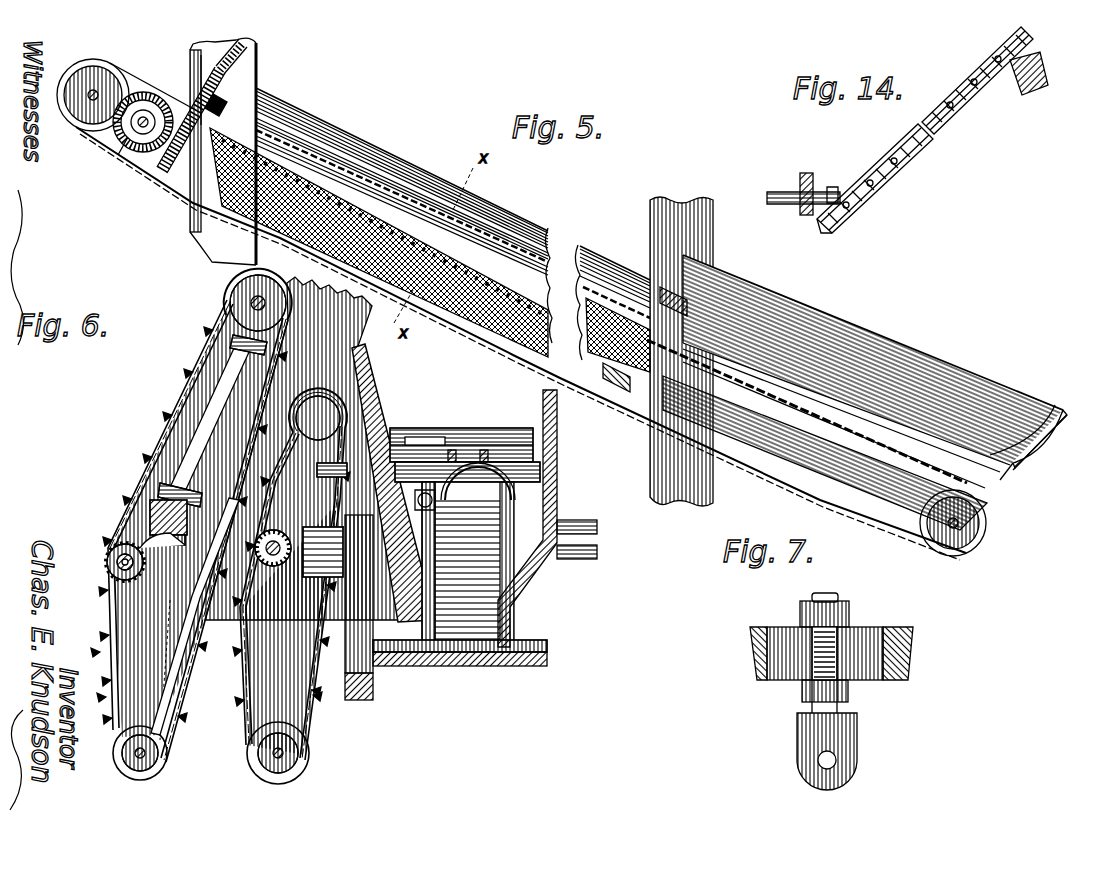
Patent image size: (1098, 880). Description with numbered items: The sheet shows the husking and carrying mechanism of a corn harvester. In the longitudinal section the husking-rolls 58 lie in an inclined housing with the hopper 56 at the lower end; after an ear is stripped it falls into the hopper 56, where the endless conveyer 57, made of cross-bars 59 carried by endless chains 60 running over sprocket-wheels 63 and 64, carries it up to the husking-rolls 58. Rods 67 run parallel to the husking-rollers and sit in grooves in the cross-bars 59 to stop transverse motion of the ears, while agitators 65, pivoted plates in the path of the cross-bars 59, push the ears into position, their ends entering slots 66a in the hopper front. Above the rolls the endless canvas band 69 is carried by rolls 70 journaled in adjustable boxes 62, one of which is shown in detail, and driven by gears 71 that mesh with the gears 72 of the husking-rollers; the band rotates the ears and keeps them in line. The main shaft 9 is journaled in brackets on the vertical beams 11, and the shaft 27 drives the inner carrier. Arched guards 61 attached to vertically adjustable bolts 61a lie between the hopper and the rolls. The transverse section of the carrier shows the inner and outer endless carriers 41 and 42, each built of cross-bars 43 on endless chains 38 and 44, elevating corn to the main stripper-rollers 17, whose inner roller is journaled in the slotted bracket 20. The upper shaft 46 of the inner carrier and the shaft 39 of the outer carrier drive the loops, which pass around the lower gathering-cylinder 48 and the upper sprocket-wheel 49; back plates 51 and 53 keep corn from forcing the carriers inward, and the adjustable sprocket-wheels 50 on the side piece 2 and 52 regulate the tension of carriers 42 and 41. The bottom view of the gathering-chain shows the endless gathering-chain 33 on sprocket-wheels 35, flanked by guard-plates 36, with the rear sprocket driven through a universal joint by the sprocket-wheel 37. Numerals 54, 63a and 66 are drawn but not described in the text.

In FIG. 6, the horizontal side piece 2 is at (157, 528).
In FIG. 5, the main shaft 9 is at (126, 146).
In FIG. 5, the vertical beam 11 is at (220, 243).
In FIG. 6, the main stripper-roller 17 is at (302, 439).
In FIG. 6, the journal-bracket 20 is at (243, 476).
In FIG. 6, the shaft 27 is at (173, 548).
In FIG. 14, the endless gathering-chain 33 is at (907, 121).
In FIG. 6, the endless gathering-chain 33 is at (318, 471).
In FIG. 6, the sprocket-wheel 35 is at (316, 529).
In FIG. 14, the guard-plate 36 is at (883, 157).
In FIG. 6, the sprocket-wheel 37 is at (120, 734).
In FIG. 6, the chain 38 is at (101, 629).
In FIG. 6, the shaft 39 is at (252, 305).
In FIG. 6, the endless carrier 41 is at (313, 731).
In FIG. 6, the endless carrier 42 is at (180, 738).
In FIG. 6, the cross-bar 43 is at (100, 652).
In FIG. 6, the endless chain 44 is at (258, 674).
In FIG. 6, the upper shaft 46 is at (320, 408).
In FIG. 6, the lower gathering-cylinder 48 is at (123, 761).
In FIG. 6, the upper sprocket-wheel 49 is at (247, 315).
In FIG. 6, the sprocket-wheel 50 is at (107, 563).
In FIG. 6, the back plate 51 is at (207, 601).
In FIG. 6, the sprocket-wheel 52 is at (291, 627).
In FIG. 6, the back plate 53 is at (270, 666).
In FIG. 6, the roller 54 is at (140, 770).
In FIG. 5, the hopper 56 is at (898, 373).
In FIG. 6, the hopper 56 is at (467, 552).
In FIG. 5, the endless conveyer 57 is at (825, 453).
In FIG. 6, the endless conveyer 57 is at (457, 643).
In FIG. 5, the husking-roll 58 is at (473, 318).
In FIG. 5, the cross-bar 59 is at (846, 407).
In FIG. 6, the cross-bar 59 is at (547, 644).
In FIG. 5, the endless chain 60 is at (450, 318).
In FIG. 6, the guard 61 is at (465, 470).
In FIG. 6, the bolt 61a is at (452, 450).
In FIG. 5, the adjustable box 62 is at (259, 78).
In FIG. 7, the adjustable box 62 is at (797, 731).
In FIG. 6, the adjustable box 62 is at (430, 509).
In FIG. 5, the sprocket-wheel 63 is at (967, 551).
In FIG. 5, the end piece 63a is at (1037, 413).
In FIG. 5, the sprocket-wheel 64 is at (64, 104).
In FIG. 5, the agitator 65 is at (993, 452).
In FIG. 5, the rail 66 is at (977, 490).
In FIG. 5, the slot 66a is at (1044, 447).
In FIG. 5, the rod 67 is at (387, 178).
In FIG. 5, the endless band 69 is at (430, 250).
In FIG. 5, the roll 70 is at (187, 93).
In FIG. 5, the gear 71 is at (190, 92).
In FIG. 5, the gear 72 is at (160, 172).